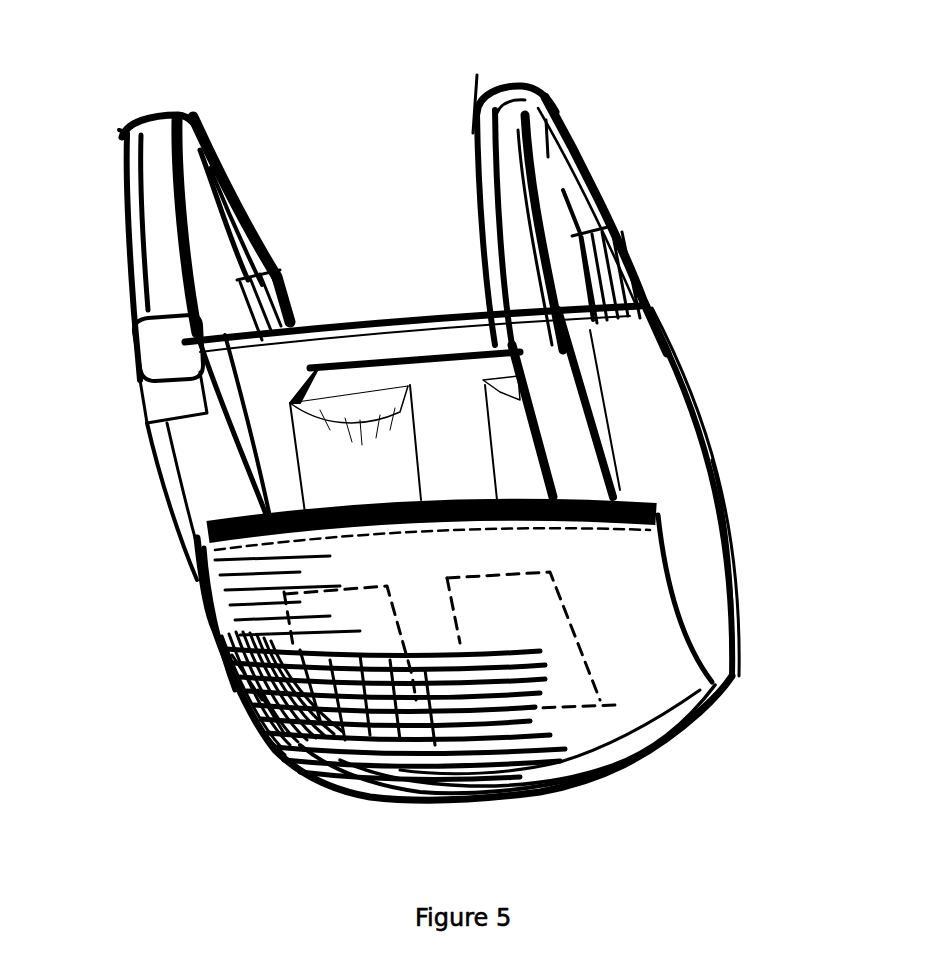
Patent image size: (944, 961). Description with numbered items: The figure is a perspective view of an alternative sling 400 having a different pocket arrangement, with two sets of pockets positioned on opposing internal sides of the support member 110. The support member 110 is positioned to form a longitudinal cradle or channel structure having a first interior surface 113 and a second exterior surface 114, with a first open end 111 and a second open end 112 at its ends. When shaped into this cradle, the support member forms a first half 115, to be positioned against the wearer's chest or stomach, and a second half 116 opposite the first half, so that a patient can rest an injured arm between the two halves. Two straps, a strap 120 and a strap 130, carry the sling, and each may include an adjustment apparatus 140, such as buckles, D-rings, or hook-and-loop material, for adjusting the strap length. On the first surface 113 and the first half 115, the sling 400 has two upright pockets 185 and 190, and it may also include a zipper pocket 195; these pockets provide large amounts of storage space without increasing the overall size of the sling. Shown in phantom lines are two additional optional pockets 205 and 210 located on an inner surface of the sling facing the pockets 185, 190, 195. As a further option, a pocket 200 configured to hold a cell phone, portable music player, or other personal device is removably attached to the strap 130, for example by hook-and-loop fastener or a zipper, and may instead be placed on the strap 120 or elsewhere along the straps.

The sling 400 is at (672, 90).
The strap 130 is at (150, 125).
The strap 120 is at (537, 90).
The adjustment apparatus 140 is at (277, 277).
The first half 115 is at (474, 318).
The zipper pocket 195 is at (453, 350).
The upright pocket 185 is at (597, 377).
The upright pocket 190 is at (313, 440).
The pocket 200 is at (158, 352).
The first interior surface 113 is at (650, 397).
The support member 110 is at (717, 583).
The first open end 111 is at (757, 619).
The second open end 112 is at (184, 697).
The second exterior surface 114 is at (653, 690).
The second half 116 is at (395, 548).
The pocket 205 is at (580, 707).
The pocket 210 is at (413, 727).